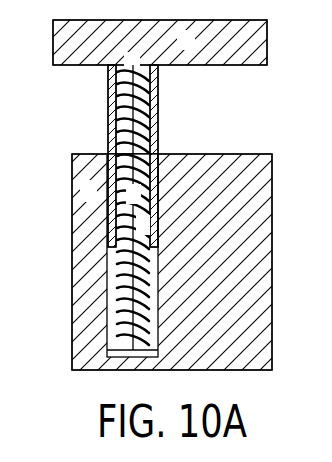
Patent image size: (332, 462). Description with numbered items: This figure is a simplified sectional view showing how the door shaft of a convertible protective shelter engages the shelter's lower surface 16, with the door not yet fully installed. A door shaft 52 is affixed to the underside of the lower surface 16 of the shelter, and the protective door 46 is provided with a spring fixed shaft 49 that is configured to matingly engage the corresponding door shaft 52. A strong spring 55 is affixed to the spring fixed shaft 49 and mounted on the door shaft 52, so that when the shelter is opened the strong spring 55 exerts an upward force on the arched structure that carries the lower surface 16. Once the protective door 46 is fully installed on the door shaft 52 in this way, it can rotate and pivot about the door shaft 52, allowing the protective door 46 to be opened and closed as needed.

The lower surface 16 is at (268, 43).
The protective door 46 is at (72, 207).
The spring fixed shaft 49 is at (159, 155).
The door shaft 52 is at (160, 112).
The strong spring 55 is at (150, 272).